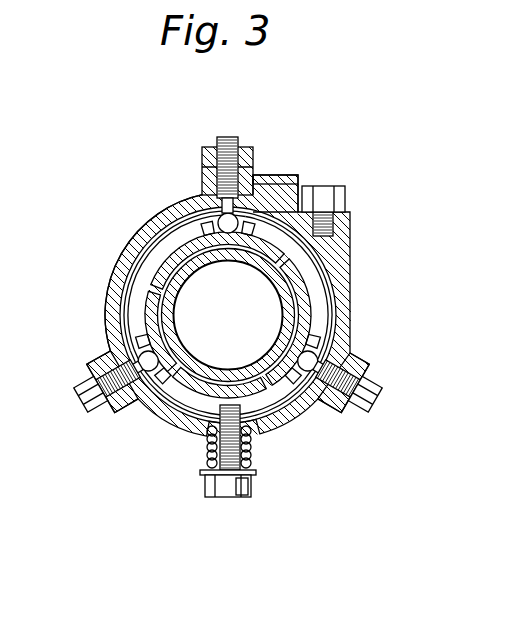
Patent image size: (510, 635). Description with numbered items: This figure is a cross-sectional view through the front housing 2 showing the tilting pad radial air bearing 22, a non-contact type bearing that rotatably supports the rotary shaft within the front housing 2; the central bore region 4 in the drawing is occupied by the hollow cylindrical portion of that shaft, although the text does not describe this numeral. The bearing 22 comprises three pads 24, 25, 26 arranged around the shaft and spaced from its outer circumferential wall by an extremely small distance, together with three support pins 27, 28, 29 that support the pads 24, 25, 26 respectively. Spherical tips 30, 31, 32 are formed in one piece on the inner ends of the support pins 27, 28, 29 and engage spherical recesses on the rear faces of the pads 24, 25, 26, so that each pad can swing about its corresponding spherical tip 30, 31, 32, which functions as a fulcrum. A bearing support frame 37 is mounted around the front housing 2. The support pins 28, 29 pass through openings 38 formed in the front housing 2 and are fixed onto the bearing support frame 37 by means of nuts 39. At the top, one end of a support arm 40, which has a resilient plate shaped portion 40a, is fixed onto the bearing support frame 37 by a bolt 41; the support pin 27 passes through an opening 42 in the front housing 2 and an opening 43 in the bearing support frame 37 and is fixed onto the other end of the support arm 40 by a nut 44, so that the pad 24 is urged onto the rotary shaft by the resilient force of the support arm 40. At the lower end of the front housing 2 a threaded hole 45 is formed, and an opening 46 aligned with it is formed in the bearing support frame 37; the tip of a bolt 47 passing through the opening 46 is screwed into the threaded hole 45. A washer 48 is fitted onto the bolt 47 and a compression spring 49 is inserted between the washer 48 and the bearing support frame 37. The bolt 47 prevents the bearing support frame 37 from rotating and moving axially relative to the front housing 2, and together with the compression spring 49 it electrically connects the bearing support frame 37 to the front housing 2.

The front housing 2 is at (348, 308).
The shaft sleeve 4 is at (250, 260).
The tilting pad radial air bearing 22 is at (120, 230).
The pad 24 is at (130, 268).
The pad 25 is at (341, 294).
The pad 26 is at (192, 425).
The support pin 27 is at (233, 137).
The support pin 28 is at (335, 423).
The support pin 29 is at (130, 420).
The spherical tip 30 is at (203, 203).
The spherical tip 31 is at (303, 380).
The spherical tip 32 is at (150, 372).
The bearing support frame 37 is at (157, 217).
The openings 38 is at (110, 348).
The nuts 39 is at (98, 418).
The support arm 40 is at (305, 173).
The resilient plate shaped portion 40a is at (277, 175).
The bolt 41 is at (343, 189).
The opening 42 is at (266, 170).
The opening 43 is at (207, 148).
The nut 44 is at (250, 150).
The threaded hole 45 is at (203, 443).
The opening 46 is at (250, 435).
The bolt 47 is at (245, 490).
The washer 48 is at (267, 473).
The compression spring 49 is at (253, 452).